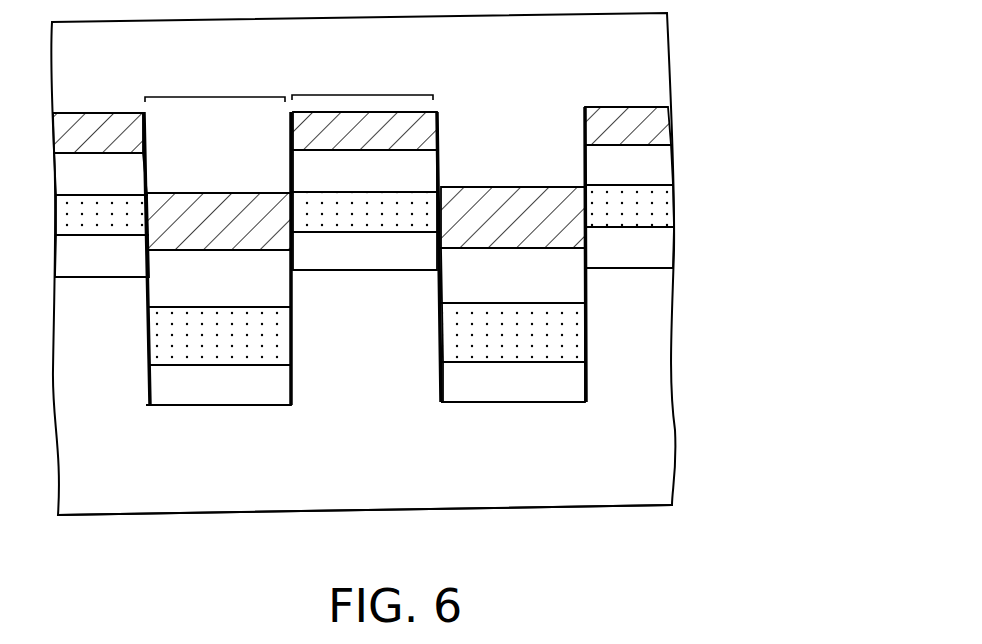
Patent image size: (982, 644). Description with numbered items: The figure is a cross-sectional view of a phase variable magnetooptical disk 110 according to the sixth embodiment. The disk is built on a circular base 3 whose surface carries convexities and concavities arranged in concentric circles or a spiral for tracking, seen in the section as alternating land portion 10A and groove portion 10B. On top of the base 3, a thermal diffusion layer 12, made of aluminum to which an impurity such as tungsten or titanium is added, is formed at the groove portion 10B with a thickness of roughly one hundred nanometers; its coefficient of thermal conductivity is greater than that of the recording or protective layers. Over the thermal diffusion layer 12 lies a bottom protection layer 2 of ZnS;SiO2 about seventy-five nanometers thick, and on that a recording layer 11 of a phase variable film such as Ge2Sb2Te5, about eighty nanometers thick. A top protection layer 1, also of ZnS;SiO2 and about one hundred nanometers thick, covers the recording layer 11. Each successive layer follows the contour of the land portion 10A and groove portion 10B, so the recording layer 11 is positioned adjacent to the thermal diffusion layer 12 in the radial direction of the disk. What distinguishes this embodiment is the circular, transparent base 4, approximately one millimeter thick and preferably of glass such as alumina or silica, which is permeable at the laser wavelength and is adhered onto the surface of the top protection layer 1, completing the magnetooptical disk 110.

The top protection layer 1 is at (663, 250).
The bottom protection layer 2 is at (663, 167).
The base 3 is at (657, 60).
The transparent base 4 is at (660, 435).
The recording layer 11 is at (662, 208).
The thermal diffusion layer 12 is at (665, 127).
The land portion 10A is at (207, 97).
The groove portion 10B is at (362, 95).
The magnetooptical disk 110 is at (750, 63).